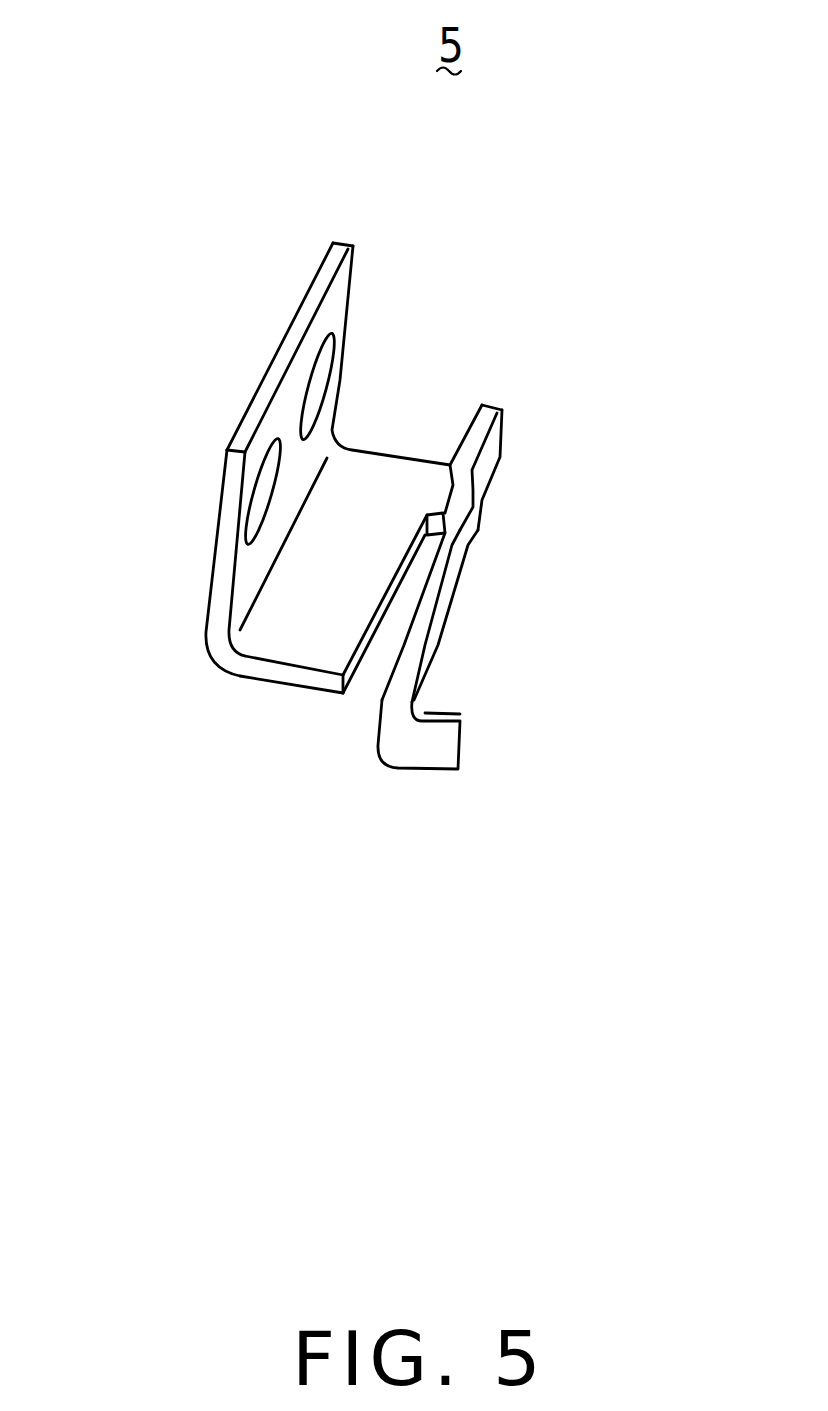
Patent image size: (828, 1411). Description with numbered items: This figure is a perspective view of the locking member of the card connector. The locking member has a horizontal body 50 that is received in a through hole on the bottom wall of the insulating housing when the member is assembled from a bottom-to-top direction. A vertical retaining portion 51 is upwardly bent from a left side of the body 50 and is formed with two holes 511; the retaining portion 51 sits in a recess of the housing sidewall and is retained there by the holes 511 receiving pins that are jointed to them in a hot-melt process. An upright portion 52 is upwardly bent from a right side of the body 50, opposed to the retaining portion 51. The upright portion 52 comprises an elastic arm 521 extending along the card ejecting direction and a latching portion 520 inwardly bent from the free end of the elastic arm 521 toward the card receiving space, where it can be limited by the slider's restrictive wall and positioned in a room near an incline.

The horizontal body 50 is at (305, 627).
The vertical retaining portion 51 is at (233, 483).
The holes 511 is at (317, 384).
The upright portion 52 is at (480, 450).
The elastic arm 521 is at (442, 565).
The latching portion 520 is at (428, 748).